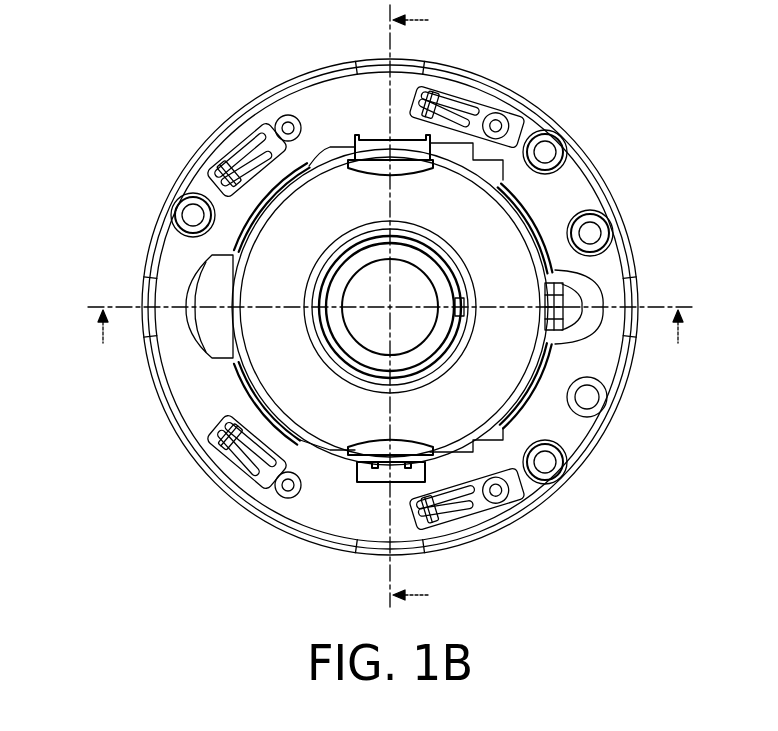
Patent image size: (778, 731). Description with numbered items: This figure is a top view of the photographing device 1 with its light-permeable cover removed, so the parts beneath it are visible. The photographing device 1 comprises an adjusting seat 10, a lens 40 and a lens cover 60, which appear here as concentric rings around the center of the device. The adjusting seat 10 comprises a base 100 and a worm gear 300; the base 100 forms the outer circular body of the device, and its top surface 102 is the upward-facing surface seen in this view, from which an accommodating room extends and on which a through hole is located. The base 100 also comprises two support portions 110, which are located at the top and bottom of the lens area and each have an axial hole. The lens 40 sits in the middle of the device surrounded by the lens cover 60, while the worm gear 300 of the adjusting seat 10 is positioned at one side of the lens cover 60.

The photographing device 1 is at (37, 22).
The adjusting seat 10 is at (650, 401).
The lens 40 is at (373, 283).
The lens cover 60 is at (497, 232).
The base 100 is at (601, 445).
The top surface 102 is at (466, 90).
The support portion 110 is at (373, 147).
The worm gear 300 is at (560, 286).